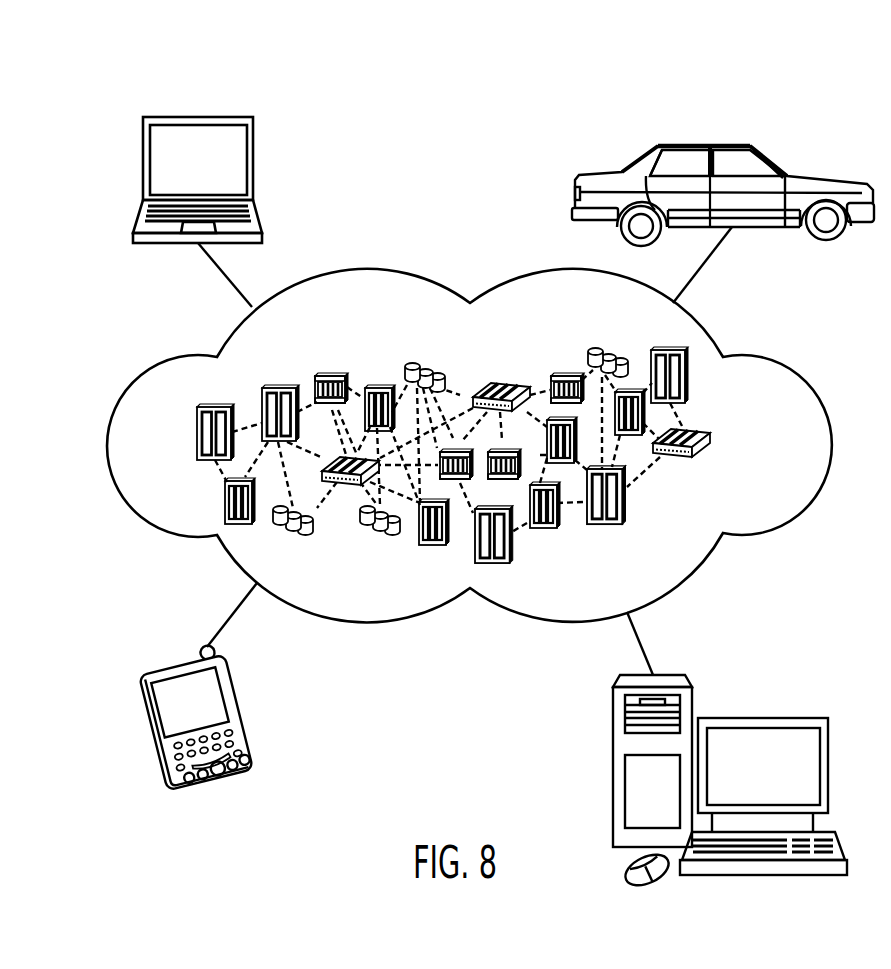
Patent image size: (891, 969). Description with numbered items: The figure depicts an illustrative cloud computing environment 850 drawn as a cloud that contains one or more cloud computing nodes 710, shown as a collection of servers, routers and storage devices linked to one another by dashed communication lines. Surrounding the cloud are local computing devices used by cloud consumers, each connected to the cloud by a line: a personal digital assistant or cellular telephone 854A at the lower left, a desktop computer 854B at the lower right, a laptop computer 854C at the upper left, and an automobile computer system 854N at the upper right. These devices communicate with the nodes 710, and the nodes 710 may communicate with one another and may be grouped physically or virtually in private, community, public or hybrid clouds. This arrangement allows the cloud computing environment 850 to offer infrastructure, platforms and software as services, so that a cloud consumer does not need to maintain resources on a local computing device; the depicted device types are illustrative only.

The laptop computer 854C is at (198, 115).
The automobile computer system 854N is at (705, 145).
The cloud computing environment 850 is at (777, 357).
The cloud computing node 710 is at (724, 446).
The personal digital assistant or cellular telephone 854A is at (178, 662).
The desktop computer 854B is at (763, 718).